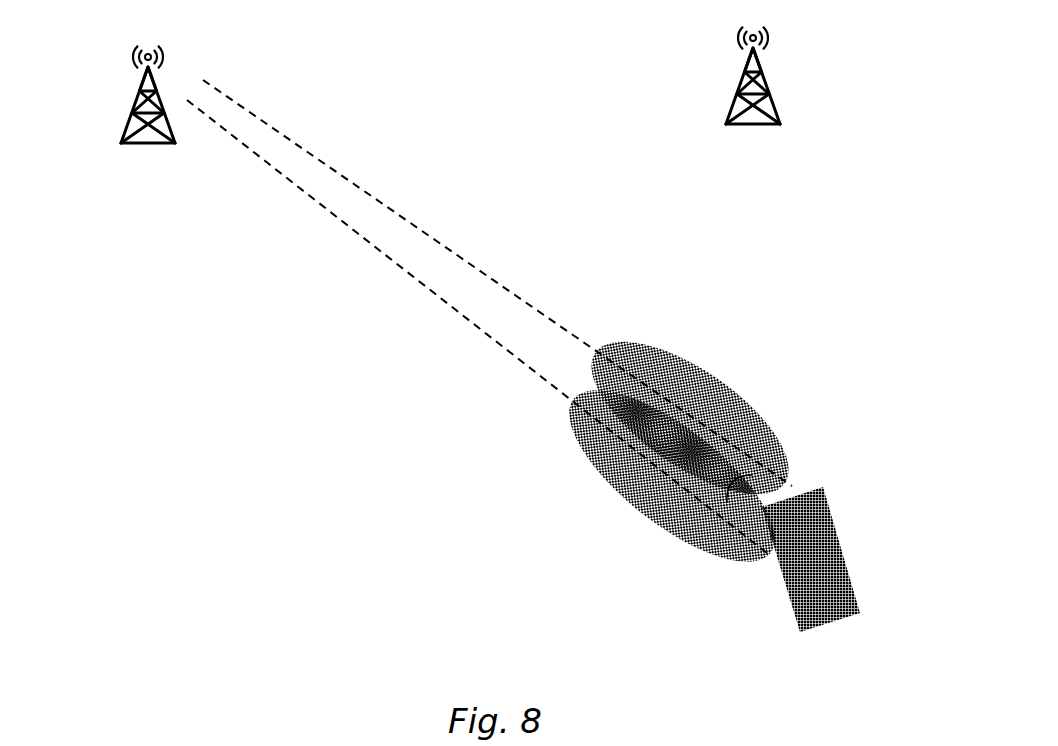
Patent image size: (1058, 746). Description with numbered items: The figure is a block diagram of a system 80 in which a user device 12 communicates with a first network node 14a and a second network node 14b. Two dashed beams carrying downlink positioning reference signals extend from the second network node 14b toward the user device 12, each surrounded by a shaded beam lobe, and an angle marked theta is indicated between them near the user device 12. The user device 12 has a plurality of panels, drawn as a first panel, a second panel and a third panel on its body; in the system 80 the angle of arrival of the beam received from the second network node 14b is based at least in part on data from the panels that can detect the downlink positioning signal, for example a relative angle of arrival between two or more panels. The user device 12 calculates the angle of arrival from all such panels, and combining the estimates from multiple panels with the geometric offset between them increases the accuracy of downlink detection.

The user device 12 is at (790, 600).
The first network node 14a is at (730, 107).
The second network node 14b is at (127, 122).
The system 80 is at (878, 661).